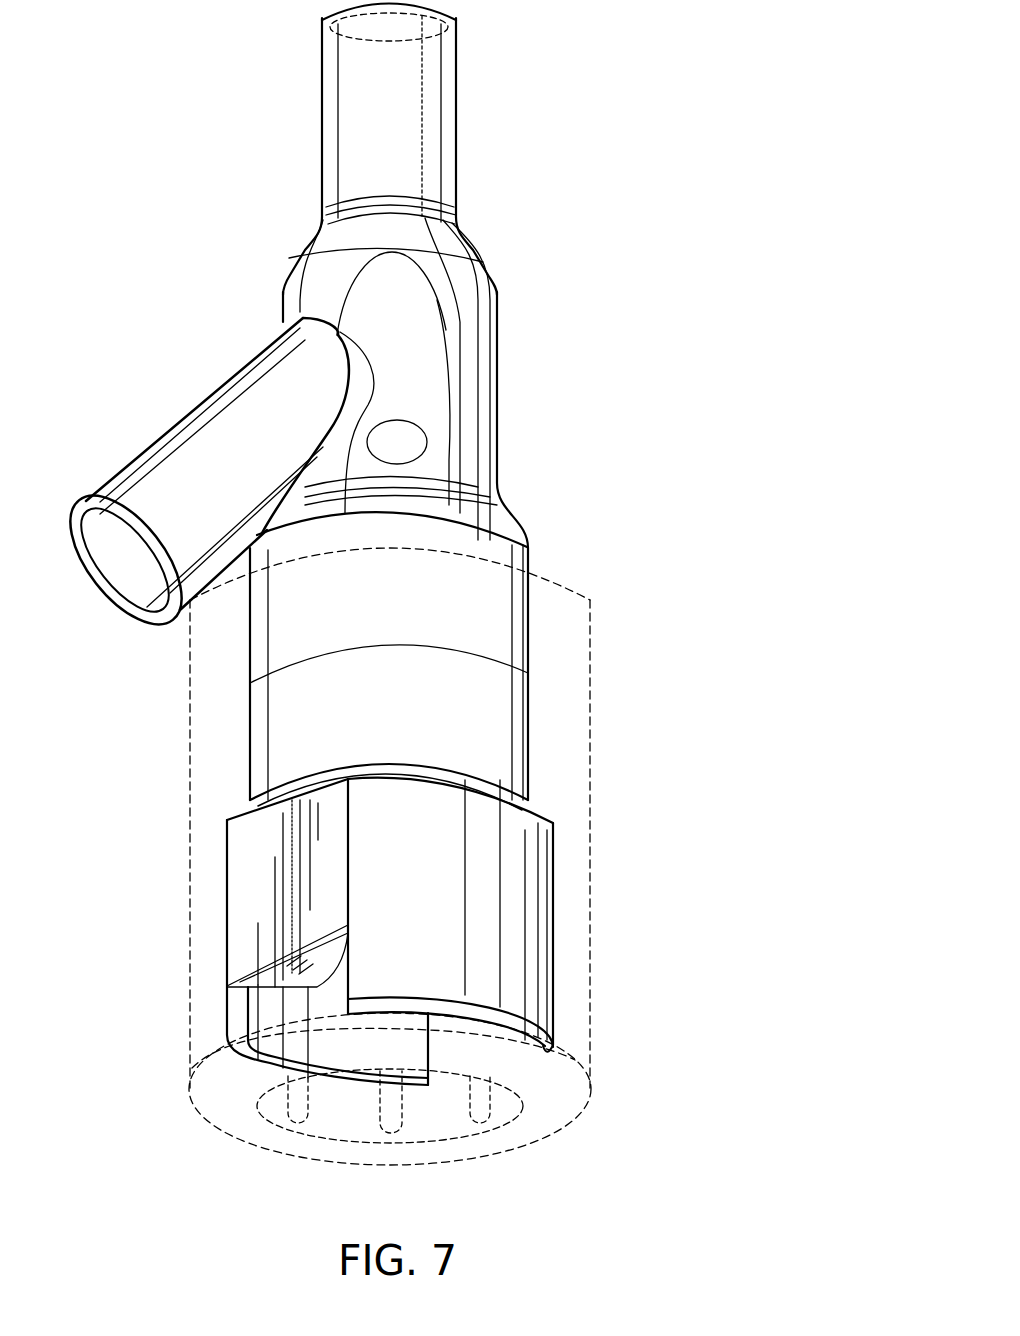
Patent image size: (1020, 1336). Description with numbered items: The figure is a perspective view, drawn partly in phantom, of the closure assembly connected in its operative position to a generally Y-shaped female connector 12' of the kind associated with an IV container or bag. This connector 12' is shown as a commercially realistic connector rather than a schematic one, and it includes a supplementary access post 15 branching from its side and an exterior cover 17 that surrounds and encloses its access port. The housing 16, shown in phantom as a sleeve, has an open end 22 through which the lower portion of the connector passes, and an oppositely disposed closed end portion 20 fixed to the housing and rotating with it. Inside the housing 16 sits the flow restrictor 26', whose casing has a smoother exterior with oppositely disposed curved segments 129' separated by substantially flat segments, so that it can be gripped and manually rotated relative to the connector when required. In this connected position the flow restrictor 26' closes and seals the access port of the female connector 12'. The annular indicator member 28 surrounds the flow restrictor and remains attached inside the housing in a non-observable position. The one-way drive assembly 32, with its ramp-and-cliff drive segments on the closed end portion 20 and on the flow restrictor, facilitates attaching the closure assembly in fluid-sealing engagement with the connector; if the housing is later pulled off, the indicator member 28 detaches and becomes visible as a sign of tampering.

The female connector 12' is at (488, 272).
The supplementary access post 15 is at (213, 390).
The exterior cover 17 is at (530, 553).
The open end 22 is at (582, 592).
The indicator member 28 is at (530, 703).
The housing 16 is at (590, 768).
The closed end portion 20 is at (558, 1110).
The flow restrictor 26' is at (485, 931).
The curved segments 129' is at (615, 935).
The drive assembly 32 is at (279, 1008).